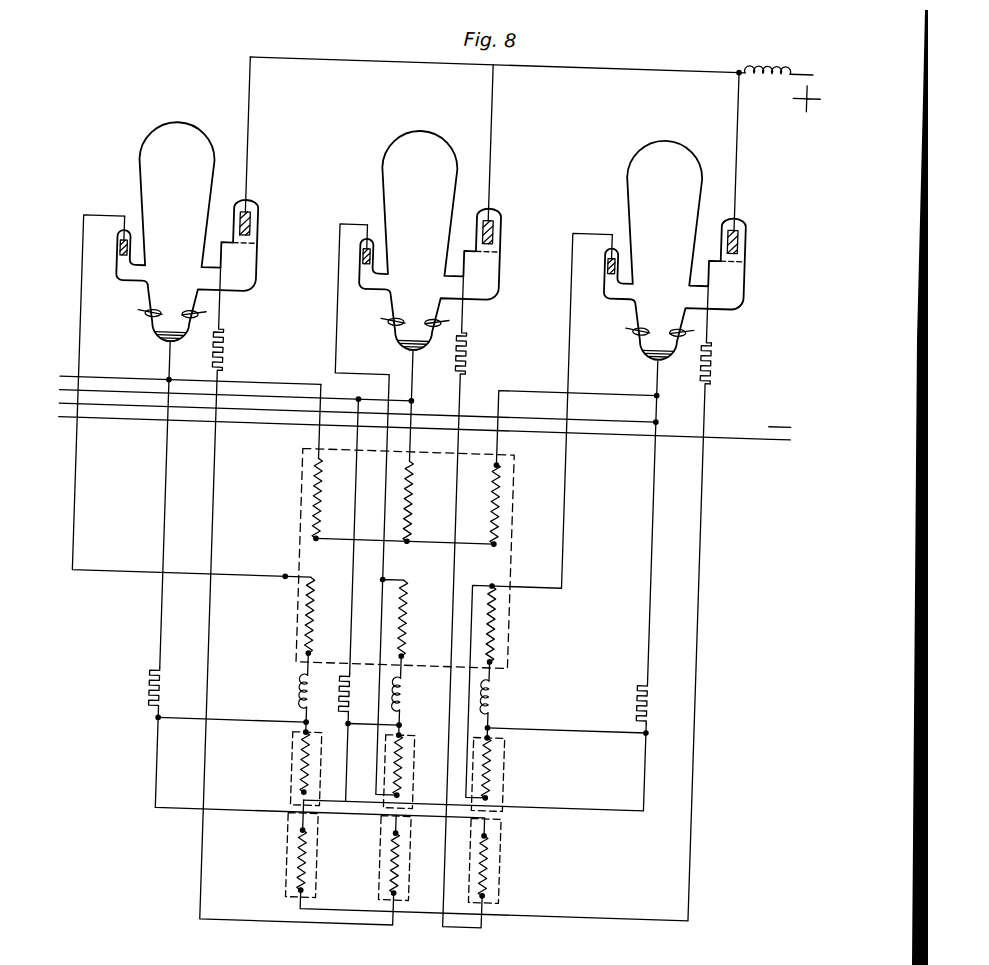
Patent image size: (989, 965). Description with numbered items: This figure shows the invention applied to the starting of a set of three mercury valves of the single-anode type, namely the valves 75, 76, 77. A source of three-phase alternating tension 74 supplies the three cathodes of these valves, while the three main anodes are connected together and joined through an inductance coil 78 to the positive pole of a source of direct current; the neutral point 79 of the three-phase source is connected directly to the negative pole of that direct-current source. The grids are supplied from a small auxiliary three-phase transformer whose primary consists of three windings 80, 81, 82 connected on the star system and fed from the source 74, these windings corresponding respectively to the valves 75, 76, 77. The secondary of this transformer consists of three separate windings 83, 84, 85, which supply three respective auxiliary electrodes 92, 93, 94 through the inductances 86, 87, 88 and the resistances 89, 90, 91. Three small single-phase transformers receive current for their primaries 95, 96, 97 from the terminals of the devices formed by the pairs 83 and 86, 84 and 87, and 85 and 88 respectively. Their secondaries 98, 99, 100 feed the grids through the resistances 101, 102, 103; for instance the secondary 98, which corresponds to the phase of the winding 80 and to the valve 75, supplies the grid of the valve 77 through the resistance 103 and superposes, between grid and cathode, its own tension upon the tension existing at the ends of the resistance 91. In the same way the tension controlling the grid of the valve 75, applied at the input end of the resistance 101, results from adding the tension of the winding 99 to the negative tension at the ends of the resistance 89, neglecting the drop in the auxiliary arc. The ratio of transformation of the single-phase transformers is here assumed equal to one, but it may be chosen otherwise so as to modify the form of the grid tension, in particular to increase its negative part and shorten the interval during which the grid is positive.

The source of three-phase alternating tension 74 is at (72, 401).
The mercury valve 75 is at (154, 181).
The mercury valve 76 is at (406, 171).
The mercury valve 77 is at (643, 165).
The inductance coil 78 is at (773, 60).
The neutral point 79 is at (75, 417).
The primary winding 80 is at (328, 488).
The primary winding 81 is at (427, 490).
The primary winding 82 is at (516, 494).
The secondary winding 83 is at (326, 615).
The secondary winding 84 is at (425, 606).
The secondary winding 85 is at (514, 606).
The inductance 86 is at (324, 680).
The inductance 87 is at (429, 684).
The inductance 88 is at (516, 681).
The resistance 89 is at (173, 685).
The resistance 90 is at (373, 686).
The resistance 91 is at (663, 690).
The auxiliary electrode 92 is at (128, 243).
The auxiliary electrode 93 is at (370, 241).
The auxiliary electrode 94 is at (613, 249).
The primary of single-phase transformer 95 is at (324, 750).
The primary of single-phase transformer 96 is at (434, 749).
The primary of single-phase transformer 97 is at (520, 750).
The secondary of single-phase transformer 98 is at (327, 843).
The secondary of single-phase transformer 99 is at (429, 840).
The secondary of single-phase transformer 100 is at (521, 837).
The resistance 101 is at (243, 339).
The resistance 102 is at (483, 337).
The resistance 103 is at (730, 346).